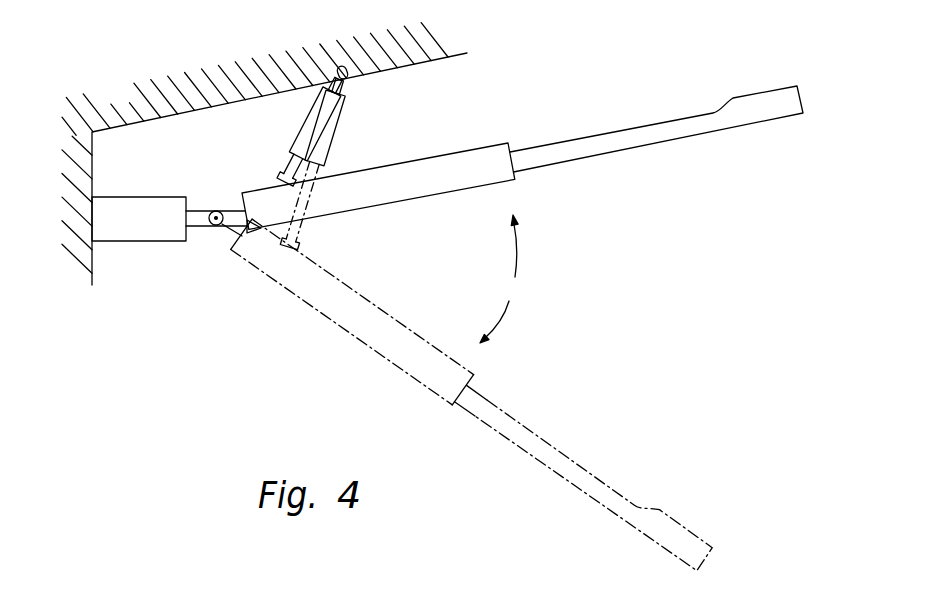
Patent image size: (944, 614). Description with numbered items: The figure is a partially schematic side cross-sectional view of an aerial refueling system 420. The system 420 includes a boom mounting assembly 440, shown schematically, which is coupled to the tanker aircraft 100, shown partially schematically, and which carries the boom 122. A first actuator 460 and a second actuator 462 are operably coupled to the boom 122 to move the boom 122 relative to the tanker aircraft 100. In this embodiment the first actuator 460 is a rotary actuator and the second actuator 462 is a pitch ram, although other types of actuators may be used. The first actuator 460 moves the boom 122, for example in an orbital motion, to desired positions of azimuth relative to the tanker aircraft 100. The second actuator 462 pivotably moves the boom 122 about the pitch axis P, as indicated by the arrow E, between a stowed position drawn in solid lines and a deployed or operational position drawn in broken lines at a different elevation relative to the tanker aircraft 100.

The tanker aircraft 100 is at (126, 102).
The first actuator 460 is at (128, 200).
The pitch axis P is at (212, 228).
The boom 122 is at (400, 197).
The boom mounting assembly 440 is at (252, 284).
The second actuator 462 is at (305, 132).
The aerial refueling system 420 is at (548, 71).
The arrow E is at (499, 279).